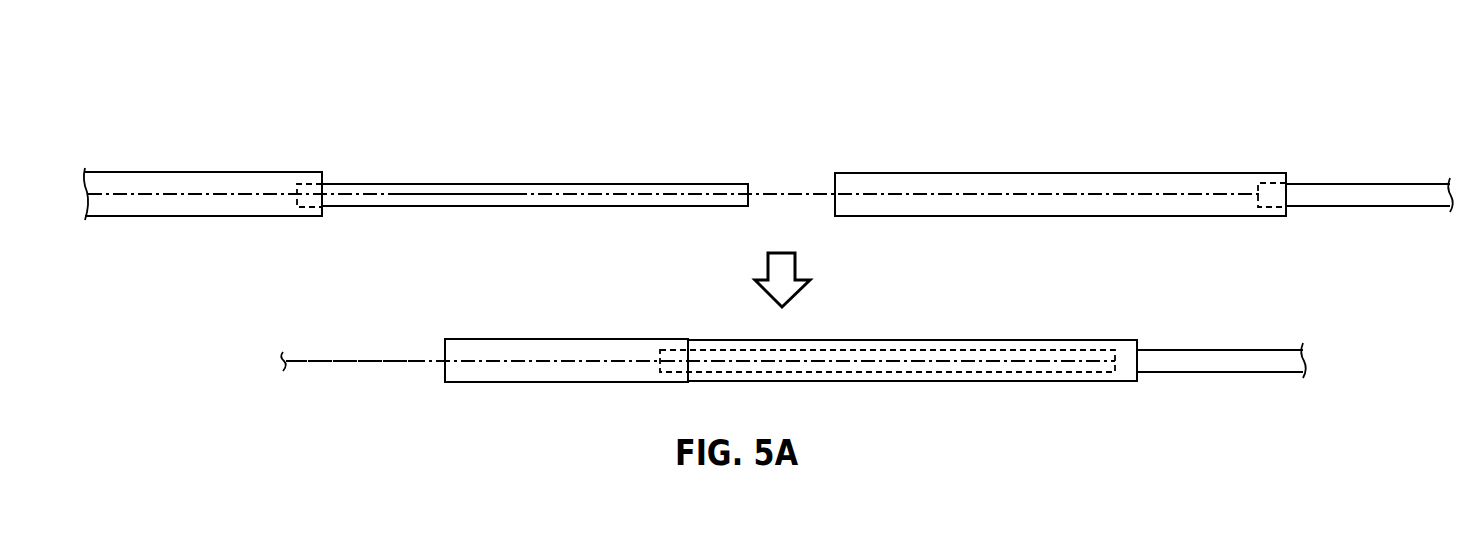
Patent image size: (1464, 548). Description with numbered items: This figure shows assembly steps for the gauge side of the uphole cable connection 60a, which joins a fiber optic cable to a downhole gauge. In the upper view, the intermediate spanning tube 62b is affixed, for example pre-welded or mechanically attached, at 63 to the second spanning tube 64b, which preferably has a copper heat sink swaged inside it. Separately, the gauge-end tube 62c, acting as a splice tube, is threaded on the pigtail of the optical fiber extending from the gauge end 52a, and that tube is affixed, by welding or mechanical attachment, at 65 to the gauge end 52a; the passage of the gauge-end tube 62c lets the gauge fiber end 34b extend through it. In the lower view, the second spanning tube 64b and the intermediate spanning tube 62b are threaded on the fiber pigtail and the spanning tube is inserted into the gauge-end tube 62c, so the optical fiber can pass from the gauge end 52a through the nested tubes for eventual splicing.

The uphole cable connection 60a is at (355, 78).
The intermediate spanning tube 62b is at (218, 172).
The affixing location 63 is at (322, 186).
The second spanning tube 64b is at (550, 183).
The gauge fiber end 34b is at (487, 196).
The gauge-end tube 62c is at (1182, 173).
The affixing location 65 is at (1287, 183).
The gauge end 52a is at (1410, 207).